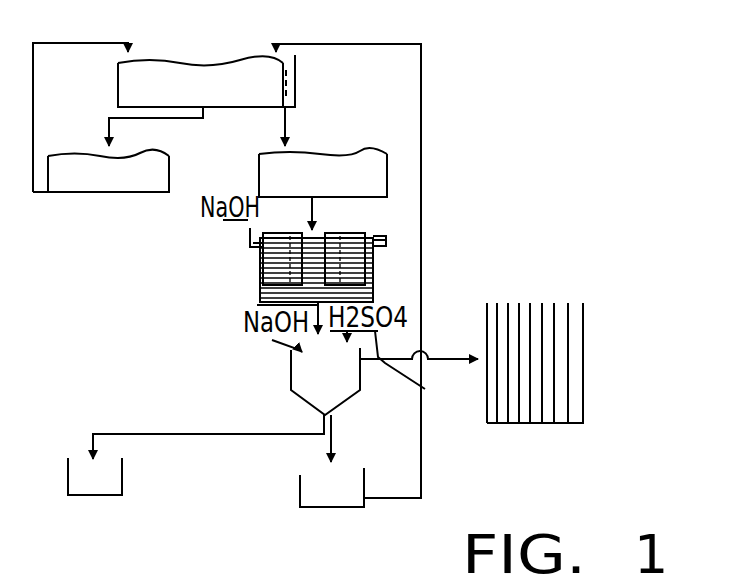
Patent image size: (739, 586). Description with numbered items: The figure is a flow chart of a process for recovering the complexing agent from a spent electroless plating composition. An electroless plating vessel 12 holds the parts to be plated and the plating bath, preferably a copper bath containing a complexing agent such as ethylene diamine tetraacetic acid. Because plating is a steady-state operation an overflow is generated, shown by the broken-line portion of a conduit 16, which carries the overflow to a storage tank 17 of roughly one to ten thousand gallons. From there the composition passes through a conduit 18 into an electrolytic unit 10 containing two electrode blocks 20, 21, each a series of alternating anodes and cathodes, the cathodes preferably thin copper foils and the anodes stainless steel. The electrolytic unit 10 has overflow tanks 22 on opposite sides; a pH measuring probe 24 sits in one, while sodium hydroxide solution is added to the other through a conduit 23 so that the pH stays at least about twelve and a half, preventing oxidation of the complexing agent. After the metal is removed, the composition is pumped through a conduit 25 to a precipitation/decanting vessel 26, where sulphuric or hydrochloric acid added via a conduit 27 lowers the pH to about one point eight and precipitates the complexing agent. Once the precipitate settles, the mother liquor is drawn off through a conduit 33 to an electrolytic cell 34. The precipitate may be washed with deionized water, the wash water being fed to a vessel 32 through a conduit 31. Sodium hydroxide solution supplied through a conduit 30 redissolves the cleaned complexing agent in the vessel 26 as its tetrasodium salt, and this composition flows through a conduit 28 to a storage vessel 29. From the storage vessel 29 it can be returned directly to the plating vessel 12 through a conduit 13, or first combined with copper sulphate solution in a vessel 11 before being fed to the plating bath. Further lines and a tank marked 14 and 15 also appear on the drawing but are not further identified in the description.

The electrolytic unit 10 is at (262, 300).
The vessel 11 is at (320, 100).
The electroless plating vessel 12 is at (200, 81).
The conduit 13 is at (369, 43).
The conduit 14 is at (35, 117).
The storage tank 15 is at (167, 180).
The conduit 16 is at (312, 145).
The storage tank 17 is at (387, 167).
The conduit 18 is at (320, 208).
The electrode block 20 is at (270, 233).
The electrode block 21 is at (355, 233).
The overflow tanks 22 is at (248, 243).
The conduit 23 is at (223, 220).
The pH measuring probe 24 is at (383, 232).
The conduit 25 is at (257, 305).
The precipitation/decanting vessel 26 is at (360, 387).
The conduit 27 is at (402, 369).
The conduit 28 is at (333, 438).
The storage vessel 29 is at (300, 494).
The conduit 30 is at (280, 342).
The conduit 31 is at (197, 410).
The vessel 32 is at (122, 482).
The conduit 33 is at (408, 354).
The electrolytic cell 34 is at (542, 438).